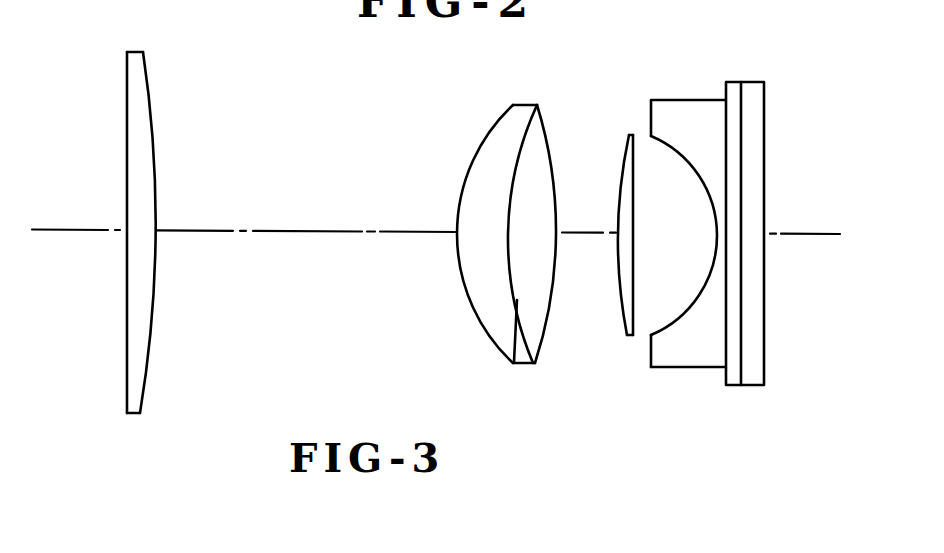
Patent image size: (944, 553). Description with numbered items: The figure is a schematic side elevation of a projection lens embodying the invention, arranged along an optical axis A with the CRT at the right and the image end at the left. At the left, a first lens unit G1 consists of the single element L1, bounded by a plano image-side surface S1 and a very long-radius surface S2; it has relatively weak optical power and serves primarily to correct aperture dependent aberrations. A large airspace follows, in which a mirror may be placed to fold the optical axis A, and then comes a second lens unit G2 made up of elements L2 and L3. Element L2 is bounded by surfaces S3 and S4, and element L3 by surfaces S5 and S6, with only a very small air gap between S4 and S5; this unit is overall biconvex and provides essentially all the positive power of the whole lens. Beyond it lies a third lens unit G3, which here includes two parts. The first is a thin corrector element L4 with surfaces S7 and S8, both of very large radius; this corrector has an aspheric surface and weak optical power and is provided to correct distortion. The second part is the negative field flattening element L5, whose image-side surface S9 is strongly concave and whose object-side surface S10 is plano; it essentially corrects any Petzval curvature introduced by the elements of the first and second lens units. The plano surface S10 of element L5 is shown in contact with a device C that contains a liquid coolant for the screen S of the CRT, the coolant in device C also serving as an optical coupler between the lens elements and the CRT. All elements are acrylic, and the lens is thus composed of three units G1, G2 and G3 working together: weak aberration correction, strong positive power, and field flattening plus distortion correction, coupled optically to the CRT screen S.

The first lens element L1 is at (135, 212).
The second lens element L2 is at (468, 216).
The third lens element L3 is at (556, 233).
The corrector element L4 is at (632, 223).
The field flattening lens element L5 is at (688, 225).
The first surface of lens L1 S1 is at (127, 146).
The second surface of lens L1 S2 is at (157, 166).
The first surface of lens L2 S3 is at (466, 290).
The second surface of lens L2 S4 is at (523, 311).
The first surface of lens L3 S5 is at (516, 365).
The second surface of lens L3 S6 is at (551, 306).
The first surface of lens L4 S7 is at (625, 318).
The second surface of lens L4 S8 is at (633, 303).
The first surface of lens L5 S9 is at (716, 250).
The second surface of lens L5 S10 is at (724, 357).
The first lens unit G1 is at (135, 242).
The second lens unit G2 is at (499, 257).
The third lens unit G3 is at (658, 248).
The coolant device C is at (735, 82).
The screen S is at (763, 82).
The optical axis A is at (801, 234).